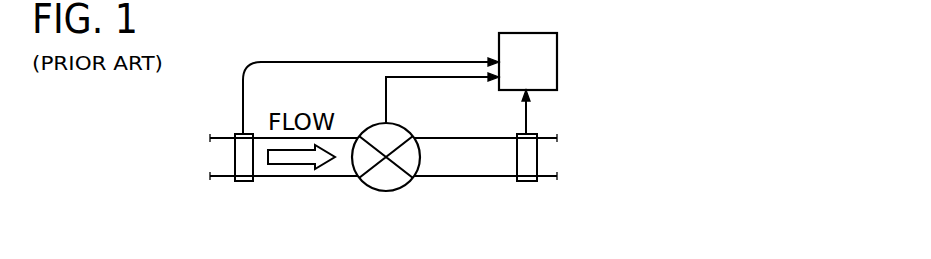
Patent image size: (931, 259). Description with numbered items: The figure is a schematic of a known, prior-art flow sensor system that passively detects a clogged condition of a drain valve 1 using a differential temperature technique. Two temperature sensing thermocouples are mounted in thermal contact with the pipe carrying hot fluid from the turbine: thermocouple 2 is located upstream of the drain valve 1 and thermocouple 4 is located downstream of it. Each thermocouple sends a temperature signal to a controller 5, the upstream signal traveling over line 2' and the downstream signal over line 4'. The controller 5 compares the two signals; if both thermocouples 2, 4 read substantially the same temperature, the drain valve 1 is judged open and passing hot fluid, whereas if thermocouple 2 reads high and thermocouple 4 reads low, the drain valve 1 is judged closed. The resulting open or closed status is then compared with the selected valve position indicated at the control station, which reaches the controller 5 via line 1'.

The drain valve 1 is at (391, 176).
The line 1' is at (442, 98).
The thermocouple 2 is at (225, 133).
The line 2' is at (371, 78).
The thermocouple 4 is at (551, 140).
The line 4' is at (503, 112).
The controller 5 is at (557, 62).